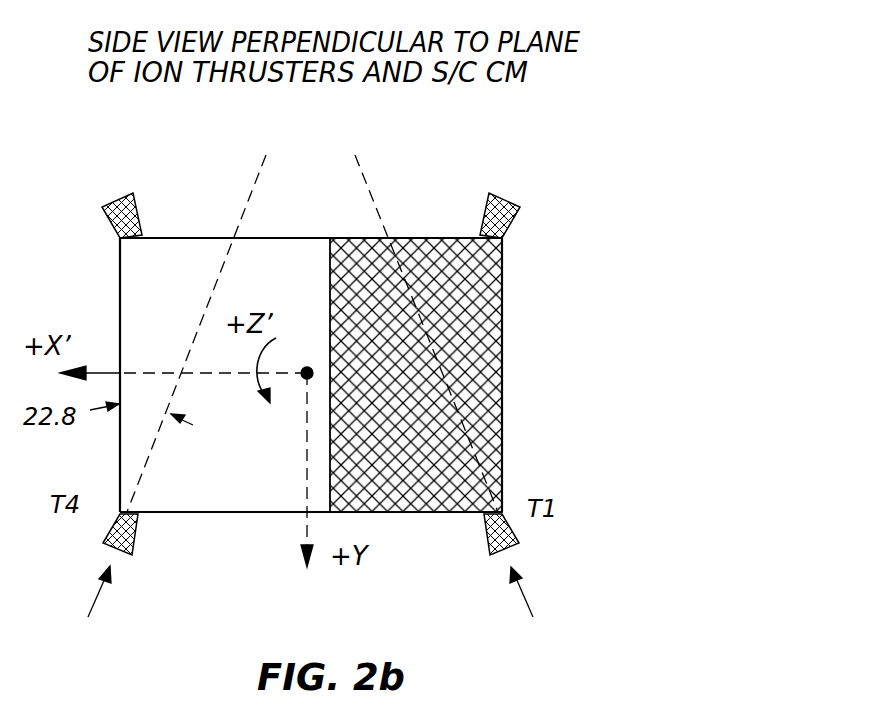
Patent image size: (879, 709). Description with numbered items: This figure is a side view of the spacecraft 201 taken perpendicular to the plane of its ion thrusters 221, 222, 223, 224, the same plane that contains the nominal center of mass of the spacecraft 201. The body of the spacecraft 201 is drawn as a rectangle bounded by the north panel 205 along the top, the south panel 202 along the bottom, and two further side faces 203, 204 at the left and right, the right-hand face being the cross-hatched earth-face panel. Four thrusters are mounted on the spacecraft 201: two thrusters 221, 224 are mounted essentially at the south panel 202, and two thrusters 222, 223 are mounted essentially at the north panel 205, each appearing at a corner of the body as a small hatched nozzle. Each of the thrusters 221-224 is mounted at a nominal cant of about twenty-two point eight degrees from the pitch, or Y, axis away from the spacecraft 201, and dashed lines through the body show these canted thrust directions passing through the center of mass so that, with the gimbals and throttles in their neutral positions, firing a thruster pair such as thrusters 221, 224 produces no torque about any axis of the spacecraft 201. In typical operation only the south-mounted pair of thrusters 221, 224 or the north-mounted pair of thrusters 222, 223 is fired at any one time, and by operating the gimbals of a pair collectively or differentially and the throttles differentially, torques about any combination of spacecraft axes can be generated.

The spacecraft 201 is at (510, 297).
The south panel 202 is at (388, 513).
The side panel 203 is at (119, 306).
The side panel 204 is at (502, 381).
The north panel 205 is at (259, 238).
The thruster 221 is at (517, 541).
The thruster 222 is at (483, 215).
The thruster 223 is at (140, 217).
The thruster 224 is at (135, 535).